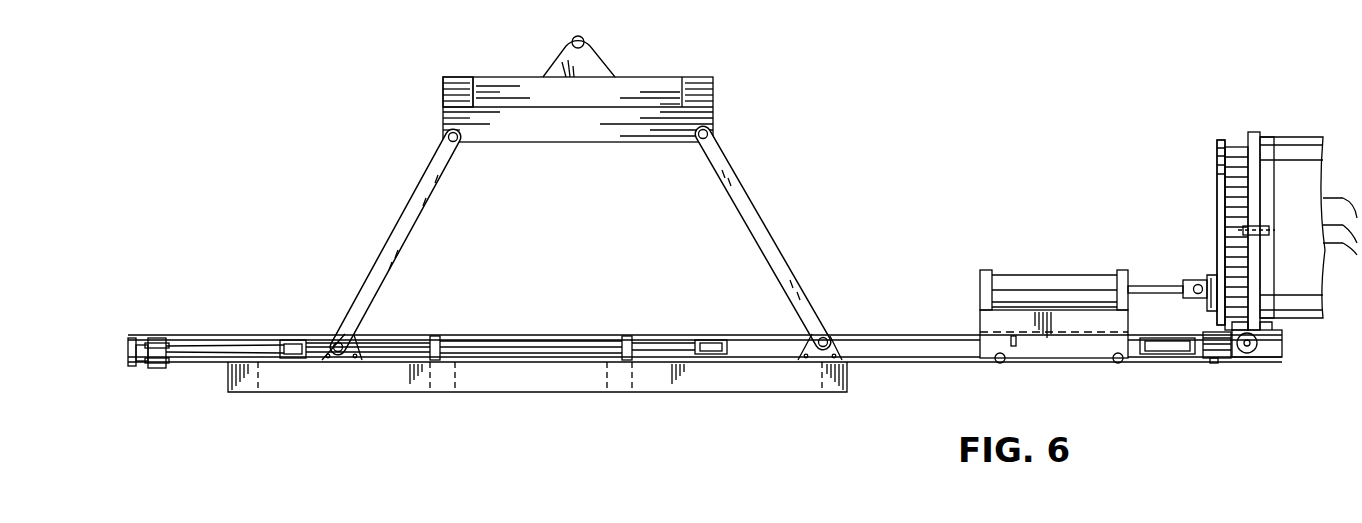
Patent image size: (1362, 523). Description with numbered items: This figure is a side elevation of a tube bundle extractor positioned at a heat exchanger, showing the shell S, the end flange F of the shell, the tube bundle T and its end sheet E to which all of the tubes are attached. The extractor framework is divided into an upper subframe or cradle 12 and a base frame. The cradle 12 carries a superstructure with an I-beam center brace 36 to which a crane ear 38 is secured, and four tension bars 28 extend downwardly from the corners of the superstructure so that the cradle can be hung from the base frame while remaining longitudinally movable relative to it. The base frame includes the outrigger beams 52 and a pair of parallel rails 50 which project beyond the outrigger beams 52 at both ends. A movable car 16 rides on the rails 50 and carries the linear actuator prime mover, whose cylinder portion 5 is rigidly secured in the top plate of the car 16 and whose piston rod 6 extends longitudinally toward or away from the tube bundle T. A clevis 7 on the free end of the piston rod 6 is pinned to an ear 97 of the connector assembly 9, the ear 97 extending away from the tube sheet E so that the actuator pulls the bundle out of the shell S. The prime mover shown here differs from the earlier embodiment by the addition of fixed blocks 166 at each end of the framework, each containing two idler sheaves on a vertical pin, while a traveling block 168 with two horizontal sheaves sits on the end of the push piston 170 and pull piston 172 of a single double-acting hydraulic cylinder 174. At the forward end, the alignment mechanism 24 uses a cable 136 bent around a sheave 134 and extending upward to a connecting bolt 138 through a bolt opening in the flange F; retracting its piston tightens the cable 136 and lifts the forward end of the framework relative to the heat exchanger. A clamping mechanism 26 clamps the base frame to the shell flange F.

The cradle 12 is at (630, 53).
The crane ear 38 is at (565, 47).
The center brace 36 is at (477, 77).
The tension bars 28 is at (738, 160).
The rails 50 is at (893, 365).
The outrigger beams 52 is at (583, 393).
The fixed blocks 166 is at (168, 338).
The traveling block 168 is at (283, 339).
The pull piston 172 is at (381, 345).
The double-acting hydraulic cylinder 174 is at (490, 345).
The push piston 170 is at (684, 312).
The car 16 is at (970, 282).
The cylinder portion 5 is at (1040, 280).
The piston rod 6 is at (1145, 287).
The clevis 7 is at (1186, 282).
The ear 97 is at (1210, 278).
The connector assembly 9 is at (1199, 240).
The end sheet E is at (1217, 160).
The tube bundle T is at (1232, 147).
The end flange F is at (1255, 132).
The shell S is at (1285, 138).
The connecting bolt 138 is at (1266, 226).
The cable 136 is at (1268, 250).
The alignment mechanism 24 is at (1128, 364).
The sheave 134 is at (1246, 358).
The clamping mechanism 26 is at (1268, 364).